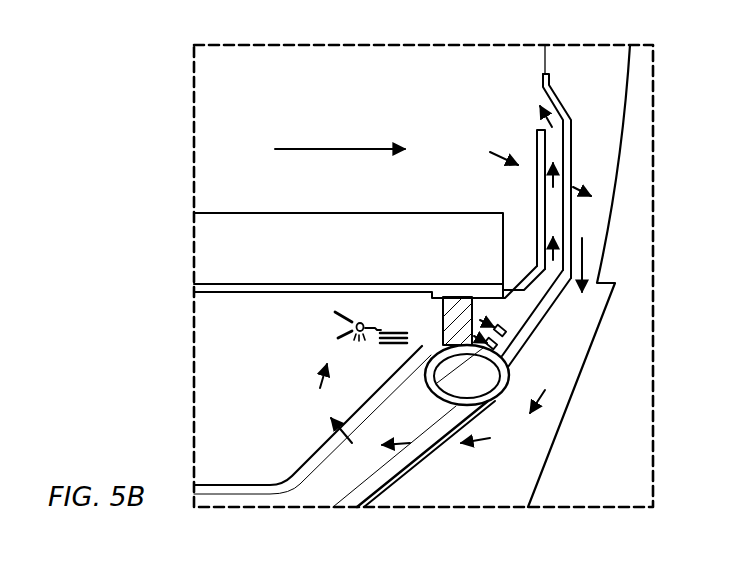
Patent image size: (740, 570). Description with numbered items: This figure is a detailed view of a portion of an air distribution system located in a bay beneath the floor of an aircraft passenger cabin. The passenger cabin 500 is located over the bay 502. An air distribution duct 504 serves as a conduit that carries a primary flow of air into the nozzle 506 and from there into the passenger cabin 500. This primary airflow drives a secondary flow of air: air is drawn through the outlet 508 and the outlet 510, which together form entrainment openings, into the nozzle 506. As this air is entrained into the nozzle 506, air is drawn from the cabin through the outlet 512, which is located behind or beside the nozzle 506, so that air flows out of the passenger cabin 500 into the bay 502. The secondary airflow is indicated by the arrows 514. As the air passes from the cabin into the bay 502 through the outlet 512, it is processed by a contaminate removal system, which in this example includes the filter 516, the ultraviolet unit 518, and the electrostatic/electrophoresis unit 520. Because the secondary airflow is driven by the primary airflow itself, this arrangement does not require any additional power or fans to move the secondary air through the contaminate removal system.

The passenger cabin 500 is at (379, 101).
The bay 502 is at (268, 430).
The air distribution duct 504 is at (430, 451).
The nozzle 506 is at (550, 198).
The outlet 508 is at (531, 335).
The outlet 510 is at (516, 359).
The outlet 512 is at (572, 94).
The arrows 514 is at (338, 149).
The filter 516 is at (443, 320).
The ultraviolet unit 518 is at (338, 325).
The electrostatic/electrophoresis unit 520 is at (381, 347).